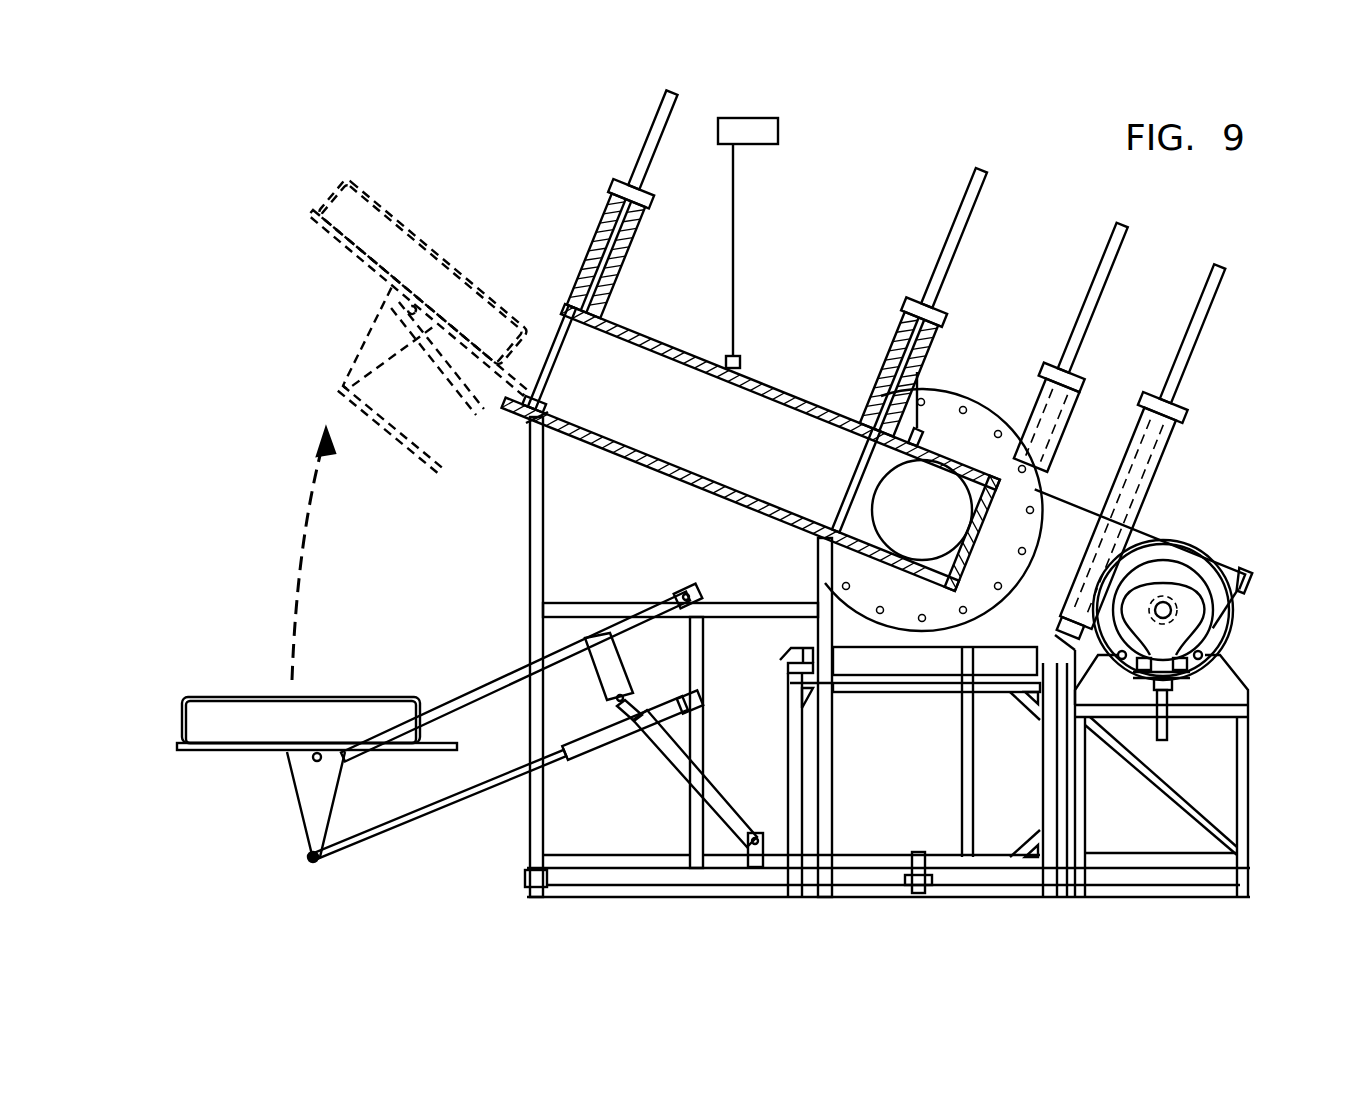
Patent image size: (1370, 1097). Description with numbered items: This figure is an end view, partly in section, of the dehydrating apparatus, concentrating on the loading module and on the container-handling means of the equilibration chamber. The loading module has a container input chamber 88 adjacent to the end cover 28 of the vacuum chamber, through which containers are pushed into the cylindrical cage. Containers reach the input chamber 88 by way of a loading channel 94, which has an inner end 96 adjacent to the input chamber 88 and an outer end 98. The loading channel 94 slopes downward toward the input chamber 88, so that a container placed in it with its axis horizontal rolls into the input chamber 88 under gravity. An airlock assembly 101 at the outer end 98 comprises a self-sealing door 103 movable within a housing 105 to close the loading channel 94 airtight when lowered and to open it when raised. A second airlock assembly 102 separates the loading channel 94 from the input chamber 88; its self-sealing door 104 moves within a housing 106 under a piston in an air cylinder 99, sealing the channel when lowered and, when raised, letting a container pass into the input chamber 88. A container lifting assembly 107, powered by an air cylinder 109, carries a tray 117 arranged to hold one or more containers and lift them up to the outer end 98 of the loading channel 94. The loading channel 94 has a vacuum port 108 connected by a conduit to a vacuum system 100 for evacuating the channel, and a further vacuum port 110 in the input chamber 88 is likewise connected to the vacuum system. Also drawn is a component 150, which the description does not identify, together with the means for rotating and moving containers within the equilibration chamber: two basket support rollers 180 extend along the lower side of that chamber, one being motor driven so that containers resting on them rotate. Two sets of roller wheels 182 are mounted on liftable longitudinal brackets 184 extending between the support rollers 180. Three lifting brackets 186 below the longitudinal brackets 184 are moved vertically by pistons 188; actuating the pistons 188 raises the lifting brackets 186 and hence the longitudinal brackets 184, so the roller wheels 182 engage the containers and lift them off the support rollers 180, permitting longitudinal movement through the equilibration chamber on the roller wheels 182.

The end cover 28 is at (1020, 492).
The container input chamber 88 is at (972, 452).
The loading channel 94 is at (692, 392).
The inner end 96 is at (828, 480).
The outer end 98 is at (590, 435).
The air cylinder 99 is at (648, 150).
The vacuum system 100 is at (772, 130).
The airlock assembly 101 is at (553, 220).
The airlock assembly 102 is at (864, 326).
The self-sealing door 103 is at (600, 240).
The self-sealing door 104 is at (880, 388).
The housing 105 is at (580, 283).
The housing 106 is at (886, 345).
The container lifting assembly 107 is at (448, 838).
The vacuum port 108 is at (740, 358).
The air cylinder 109 is at (664, 778).
The vacuum port 110 is at (917, 372).
The tray 117 is at (352, 690).
The drum 150 is at (1224, 568).
The basket support rollers 180 is at (1206, 648).
The roller wheels 182 is at (1178, 650).
The longitudinal brackets 184 is at (1207, 672).
The lifting brackets 186 is at (1202, 717).
The pistons 188 is at (1167, 732).